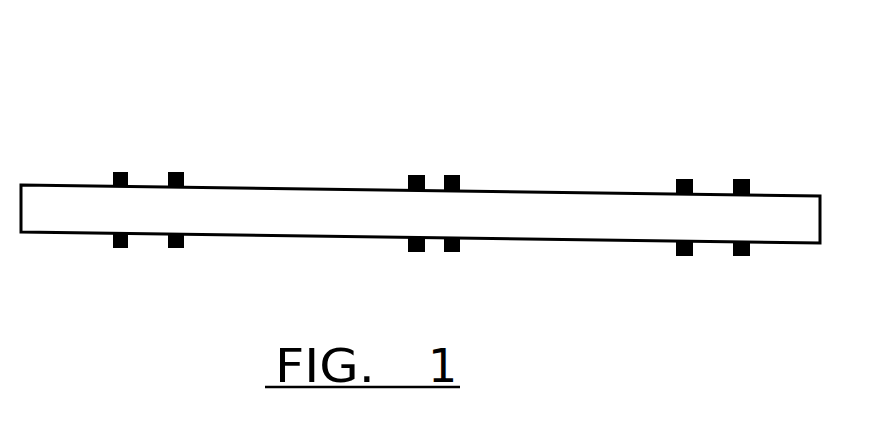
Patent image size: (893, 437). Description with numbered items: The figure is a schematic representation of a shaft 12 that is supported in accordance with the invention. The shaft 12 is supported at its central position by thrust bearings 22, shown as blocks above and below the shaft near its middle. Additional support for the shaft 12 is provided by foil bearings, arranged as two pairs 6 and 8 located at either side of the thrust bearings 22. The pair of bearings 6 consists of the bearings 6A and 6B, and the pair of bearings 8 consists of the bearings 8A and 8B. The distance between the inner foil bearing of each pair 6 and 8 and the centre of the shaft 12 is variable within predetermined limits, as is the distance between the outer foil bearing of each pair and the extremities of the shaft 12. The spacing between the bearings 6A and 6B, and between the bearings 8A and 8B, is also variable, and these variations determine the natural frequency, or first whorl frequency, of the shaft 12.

The shaft 12 is at (582, 240).
The pair of foil bearings 6 is at (177, 173).
The foil bearing 6A is at (112, 180).
The foil bearing 6B is at (185, 183).
The thrust bearings 22 is at (415, 175).
The pair of foil bearings 8 is at (741, 180).
The foil bearing 8A is at (676, 192).
The foil bearing 8B is at (750, 193).